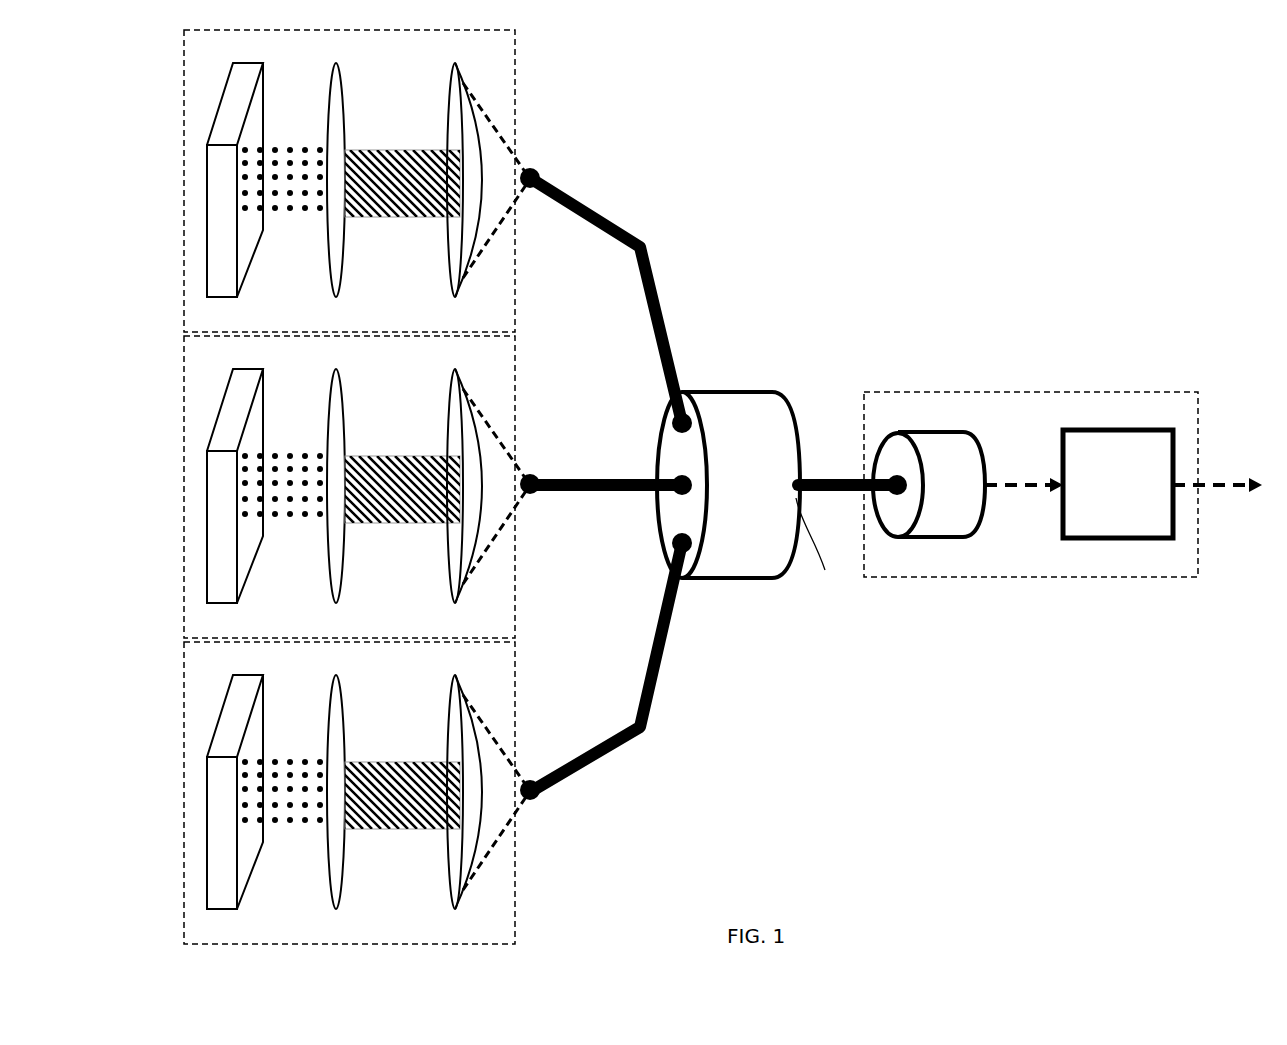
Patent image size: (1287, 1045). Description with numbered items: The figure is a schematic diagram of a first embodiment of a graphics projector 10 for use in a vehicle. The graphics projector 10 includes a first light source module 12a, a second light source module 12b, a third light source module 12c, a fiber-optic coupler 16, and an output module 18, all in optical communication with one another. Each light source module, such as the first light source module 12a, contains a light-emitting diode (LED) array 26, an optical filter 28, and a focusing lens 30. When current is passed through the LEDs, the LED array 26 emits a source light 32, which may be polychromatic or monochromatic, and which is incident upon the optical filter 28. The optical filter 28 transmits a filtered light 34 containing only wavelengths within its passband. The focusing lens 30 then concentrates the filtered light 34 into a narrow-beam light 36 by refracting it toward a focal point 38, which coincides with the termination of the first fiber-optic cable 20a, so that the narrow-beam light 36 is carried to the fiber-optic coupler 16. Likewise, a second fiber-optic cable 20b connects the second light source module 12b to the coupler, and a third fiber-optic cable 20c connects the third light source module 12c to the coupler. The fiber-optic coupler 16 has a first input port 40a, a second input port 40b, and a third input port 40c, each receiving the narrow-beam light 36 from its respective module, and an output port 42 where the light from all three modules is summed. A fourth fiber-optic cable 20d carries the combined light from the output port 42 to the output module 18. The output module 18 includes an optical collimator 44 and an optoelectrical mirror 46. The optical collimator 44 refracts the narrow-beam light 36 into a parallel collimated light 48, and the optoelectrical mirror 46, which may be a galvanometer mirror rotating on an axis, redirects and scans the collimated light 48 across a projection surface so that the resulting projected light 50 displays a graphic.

The graphics projector 10 is at (972, 182).
The first light source module 12a is at (172, 124).
The second light source module 12b is at (172, 430).
The third light source module 12c is at (172, 736).
The fiber-optic coupler 16 is at (728, 485).
The output module 18 is at (1158, 380).
The first fiber-optic cable 20a is at (652, 251).
The second fiber-optic cable 20b is at (592, 478).
The third fiber-optic cable 20c is at (662, 676).
The fourth fiber-optic cable 20d is at (847, 475).
The light-emitting diode (LED) array 26 is at (245, 70).
The optical filter 28 is at (346, 78).
The focusing lens 30 is at (452, 279).
The source light 32 is at (269, 226).
The filtered light 34 is at (370, 226).
The narrow-beam light 36 is at (497, 108).
The focal point 38 is at (532, 190).
The first input port 40a is at (676, 420).
The second input port 40b is at (674, 500).
The third input port 40c is at (685, 553).
The output port 42 is at (818, 546).
The optical collimator 44 is at (929, 484).
The optoelectrical mirror 46 is at (1118, 484).
The collimated light 48 is at (1018, 472).
The projected light 50 is at (1228, 490).